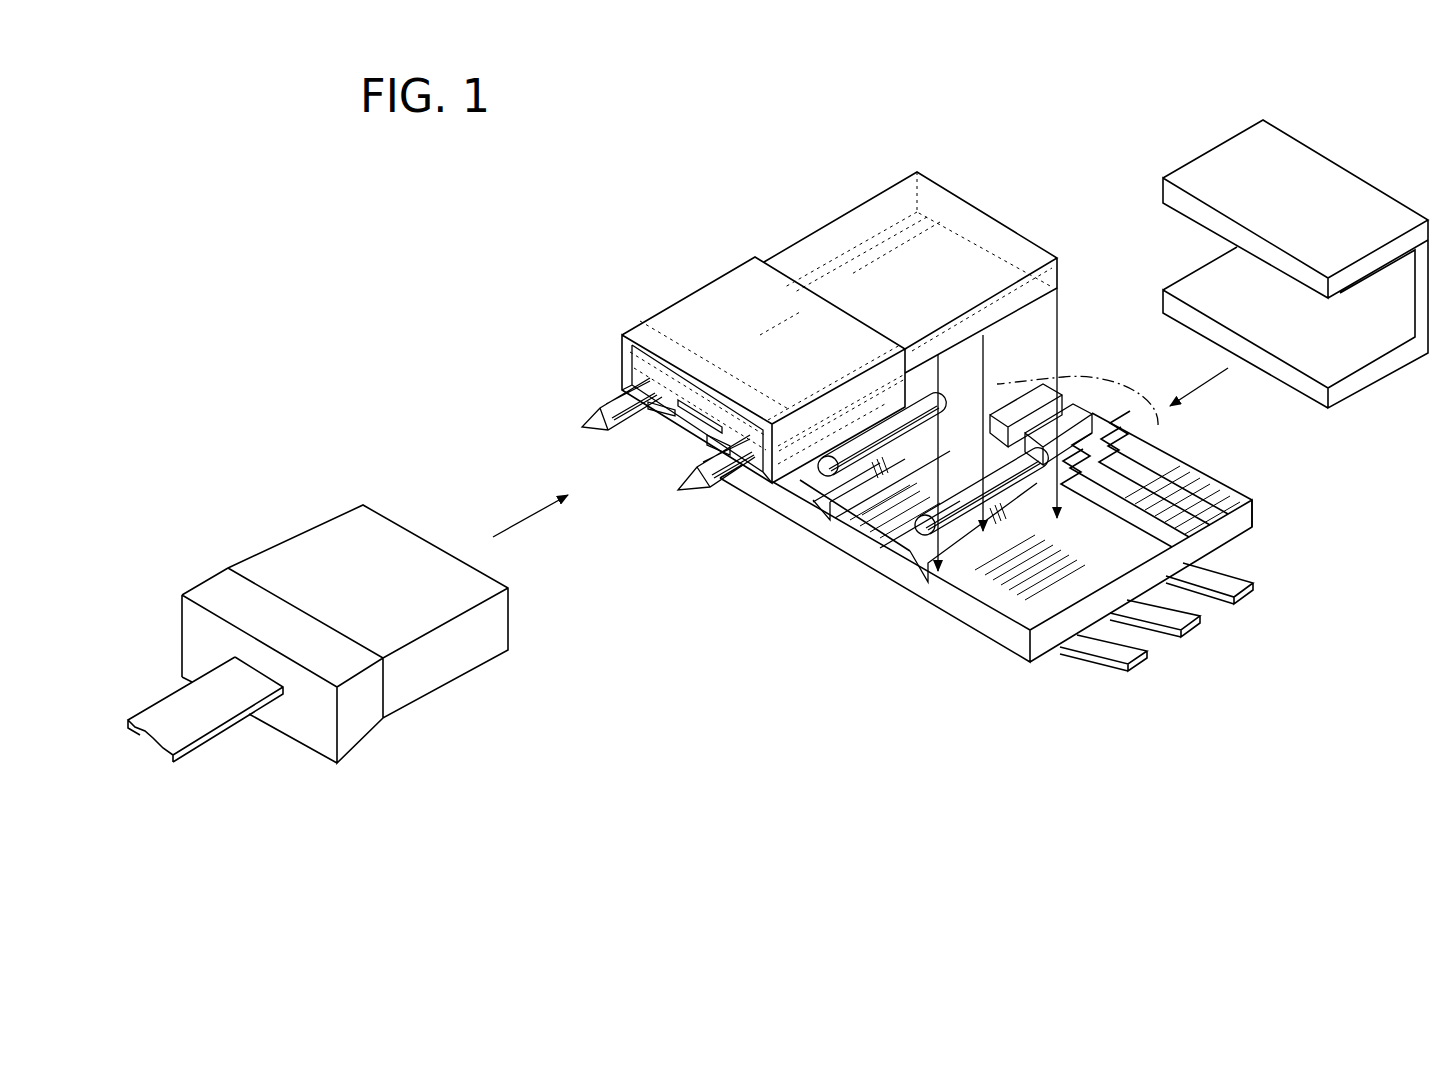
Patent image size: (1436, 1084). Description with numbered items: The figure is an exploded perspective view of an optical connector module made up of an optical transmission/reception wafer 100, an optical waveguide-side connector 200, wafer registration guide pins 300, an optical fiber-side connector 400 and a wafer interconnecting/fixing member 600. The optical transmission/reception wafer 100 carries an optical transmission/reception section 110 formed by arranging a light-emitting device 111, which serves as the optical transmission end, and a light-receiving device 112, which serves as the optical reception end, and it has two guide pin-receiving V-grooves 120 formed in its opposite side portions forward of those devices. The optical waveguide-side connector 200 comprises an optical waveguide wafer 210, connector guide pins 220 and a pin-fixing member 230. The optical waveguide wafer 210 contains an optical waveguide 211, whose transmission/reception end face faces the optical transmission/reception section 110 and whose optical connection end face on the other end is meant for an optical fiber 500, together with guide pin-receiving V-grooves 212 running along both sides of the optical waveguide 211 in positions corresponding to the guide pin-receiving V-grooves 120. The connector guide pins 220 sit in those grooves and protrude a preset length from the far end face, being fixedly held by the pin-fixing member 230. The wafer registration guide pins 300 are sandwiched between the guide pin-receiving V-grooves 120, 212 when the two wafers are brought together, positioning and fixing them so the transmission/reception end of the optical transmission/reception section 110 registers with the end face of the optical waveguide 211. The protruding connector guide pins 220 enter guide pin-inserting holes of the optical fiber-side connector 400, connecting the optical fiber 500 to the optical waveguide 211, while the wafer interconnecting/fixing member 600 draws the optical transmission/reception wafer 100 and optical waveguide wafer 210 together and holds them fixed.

The optical transmission/reception wafer 100 is at (1062, 536).
The optical transmission/reception section 110 is at (1197, 423).
The light-emitting device 111 is at (1095, 417).
The light-receiving device 112 is at (1042, 391).
The guide pin-receiving V-grooves 120 is at (820, 505).
The optical waveguide-side connector 200 is at (813, 329).
The optical waveguide wafer 210 is at (939, 329).
The optical waveguide 211 is at (689, 418).
The guide pin-receiving V-grooves 212 is at (967, 197).
The connector guide pins 220 is at (610, 405).
The pin-fixing member 230 is at (696, 327).
The wafer registration guide pins 300 is at (820, 476).
The optical fiber-side connector 400 is at (281, 545).
The optical fiber 500 is at (198, 748).
The wafer interconnecting/fixing member 600 is at (1287, 147).